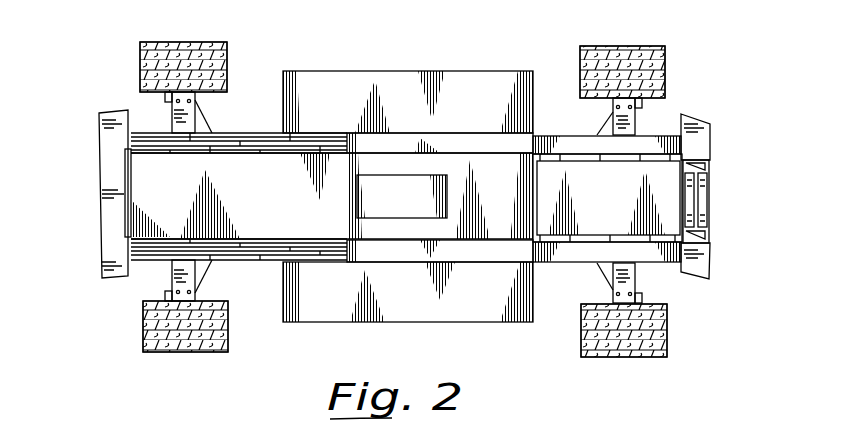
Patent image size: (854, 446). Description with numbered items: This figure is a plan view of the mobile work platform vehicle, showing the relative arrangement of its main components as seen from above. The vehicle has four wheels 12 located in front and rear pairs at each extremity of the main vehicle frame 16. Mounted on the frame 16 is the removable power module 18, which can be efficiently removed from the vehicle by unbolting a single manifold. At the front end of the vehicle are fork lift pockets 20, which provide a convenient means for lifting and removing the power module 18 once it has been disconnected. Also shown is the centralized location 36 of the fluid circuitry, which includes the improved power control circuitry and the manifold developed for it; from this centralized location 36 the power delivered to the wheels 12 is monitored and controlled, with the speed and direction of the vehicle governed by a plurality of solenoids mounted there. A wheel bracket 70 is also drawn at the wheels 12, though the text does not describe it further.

The wheel 12 is at (664, 52).
The frame end member 16 is at (130, 178).
The platform panel 18 is at (615, 209).
The coupling member 20 is at (709, 162).
The access opening 36 is at (415, 209).
The wheel bracket 70 is at (200, 116).